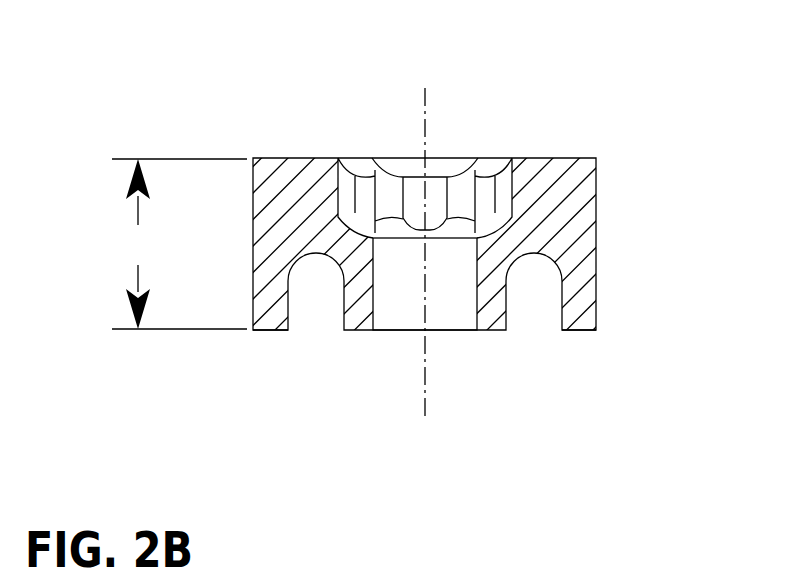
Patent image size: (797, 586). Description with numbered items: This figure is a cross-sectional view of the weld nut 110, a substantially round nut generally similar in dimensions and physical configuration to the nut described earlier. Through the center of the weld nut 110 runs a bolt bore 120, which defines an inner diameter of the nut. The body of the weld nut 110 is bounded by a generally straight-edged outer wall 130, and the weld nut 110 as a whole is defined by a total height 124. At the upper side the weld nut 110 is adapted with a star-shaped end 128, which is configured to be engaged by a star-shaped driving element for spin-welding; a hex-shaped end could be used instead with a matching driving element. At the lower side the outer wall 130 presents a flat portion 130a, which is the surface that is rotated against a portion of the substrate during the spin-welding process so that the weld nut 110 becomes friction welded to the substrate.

The weld nut 110 is at (277, 118).
The bolt bore 120 is at (453, 297).
The total height 124 is at (179, 244).
The star-shaped end 128 is at (450, 183).
The outer wall 130 is at (597, 213).
The flat portion 130a is at (281, 330).